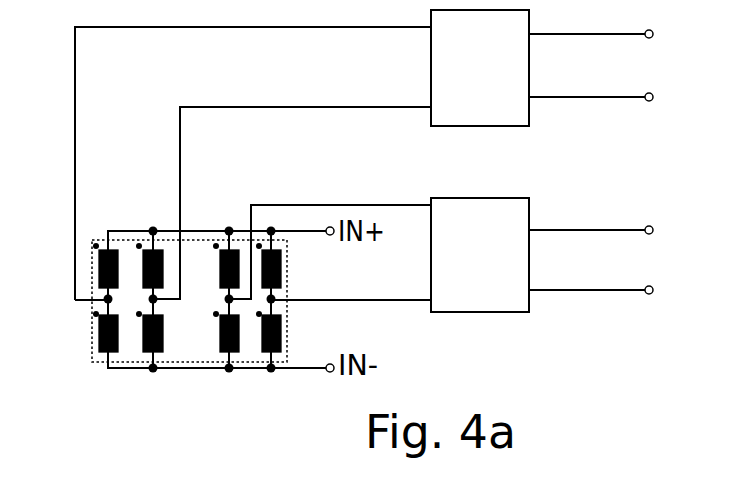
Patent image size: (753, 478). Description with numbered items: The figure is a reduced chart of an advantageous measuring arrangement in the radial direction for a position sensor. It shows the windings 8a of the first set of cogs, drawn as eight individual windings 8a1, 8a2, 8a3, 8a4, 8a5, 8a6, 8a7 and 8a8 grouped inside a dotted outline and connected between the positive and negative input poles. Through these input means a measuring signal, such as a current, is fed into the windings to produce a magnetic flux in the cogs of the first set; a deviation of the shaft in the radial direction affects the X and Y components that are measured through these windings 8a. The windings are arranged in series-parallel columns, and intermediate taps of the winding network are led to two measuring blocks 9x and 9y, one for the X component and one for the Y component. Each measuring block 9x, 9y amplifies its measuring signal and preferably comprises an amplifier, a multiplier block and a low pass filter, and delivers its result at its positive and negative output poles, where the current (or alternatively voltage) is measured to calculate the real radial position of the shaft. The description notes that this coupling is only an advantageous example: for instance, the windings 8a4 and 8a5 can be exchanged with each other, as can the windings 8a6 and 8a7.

The windings of the first set of cogs 8a is at (92, 344).
The winding 8a1 is at (283, 329).
The winding 8a2 is at (102, 248).
The winding 8a3 is at (143, 352).
The winding 8a4 is at (283, 268).
The winding 8a5 is at (219, 334).
The winding 8a6 is at (148, 250).
The winding 8a7 is at (103, 352).
The winding 8a8 is at (219, 252).
The measuring block 9x is at (482, 126).
The measuring block 9y is at (484, 313).